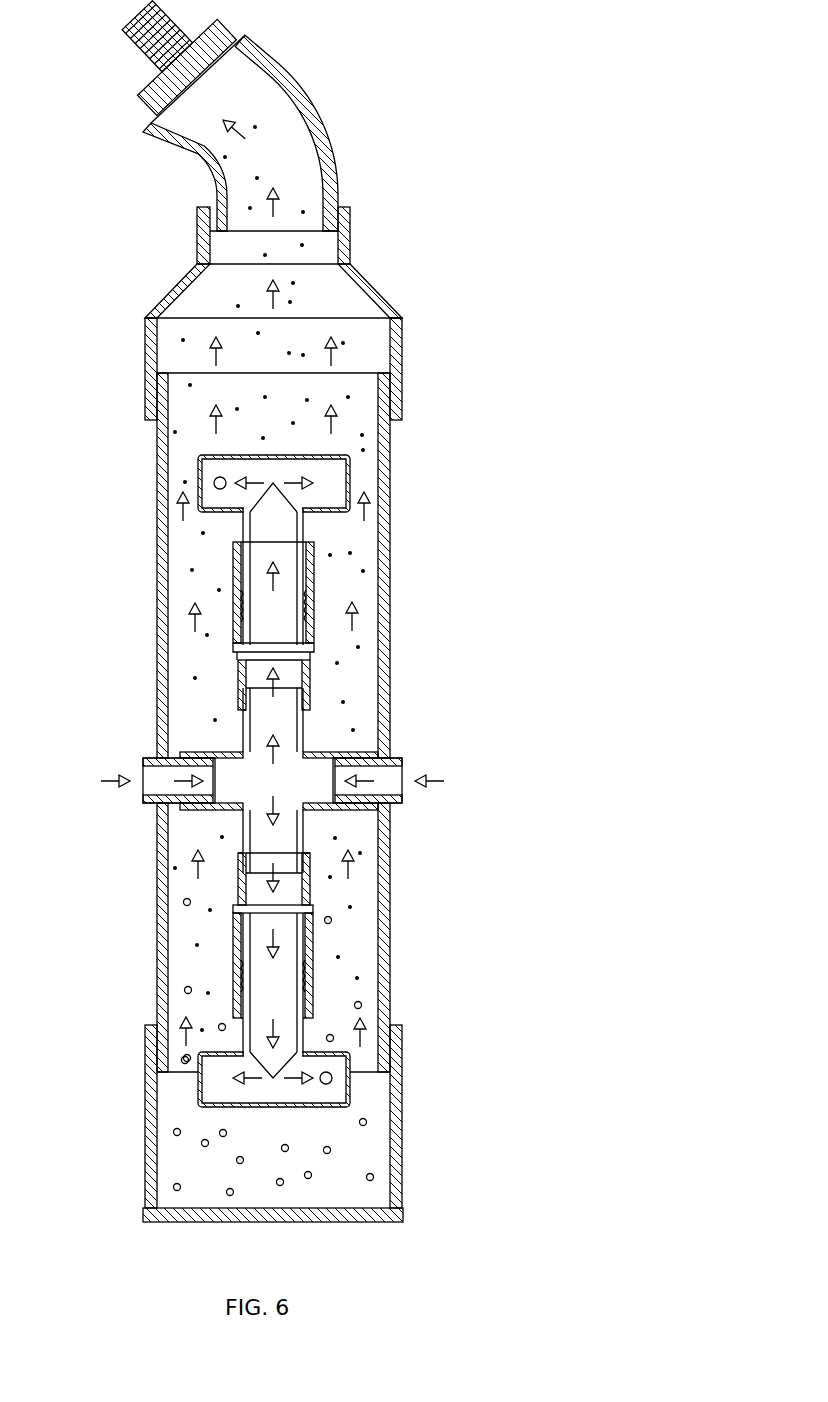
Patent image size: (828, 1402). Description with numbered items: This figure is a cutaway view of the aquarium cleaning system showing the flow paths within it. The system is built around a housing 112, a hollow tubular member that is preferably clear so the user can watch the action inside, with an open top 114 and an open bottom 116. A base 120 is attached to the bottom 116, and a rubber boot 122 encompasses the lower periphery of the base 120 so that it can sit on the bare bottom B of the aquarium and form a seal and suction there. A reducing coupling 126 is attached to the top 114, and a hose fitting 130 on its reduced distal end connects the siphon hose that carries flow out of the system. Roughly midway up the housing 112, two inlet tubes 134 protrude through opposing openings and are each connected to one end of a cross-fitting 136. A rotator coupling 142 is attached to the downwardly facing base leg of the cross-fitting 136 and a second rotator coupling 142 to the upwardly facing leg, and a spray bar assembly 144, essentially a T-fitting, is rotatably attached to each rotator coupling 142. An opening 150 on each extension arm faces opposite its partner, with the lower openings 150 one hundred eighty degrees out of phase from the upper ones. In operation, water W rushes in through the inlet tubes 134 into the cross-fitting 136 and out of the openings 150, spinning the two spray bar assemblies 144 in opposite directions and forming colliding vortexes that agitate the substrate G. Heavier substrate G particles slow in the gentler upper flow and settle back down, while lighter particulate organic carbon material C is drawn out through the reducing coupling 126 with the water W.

The housing 112 is at (157, 630).
The open top 114 is at (385, 375).
The open bottom 116 is at (390, 1068).
The base 120 is at (405, 1127).
The rubber boot 122 is at (400, 1190).
The reducing coupling 126 is at (400, 322).
The hose fitting 130 is at (320, 135).
The inlet tube 134 is at (157, 760).
The cross-fitting 136 is at (243, 800).
The rotator coupling 142 is at (320, 597).
The spray bar assembly 144 is at (208, 452).
The opening 150 is at (214, 483).
The particulate organic carbon material C is at (255, 127).
The water W is at (362, 608).
The substrate G is at (333, 919).
The bottom B is at (370, 1225).